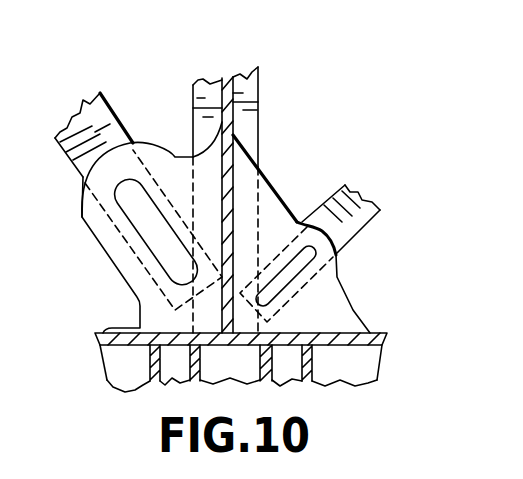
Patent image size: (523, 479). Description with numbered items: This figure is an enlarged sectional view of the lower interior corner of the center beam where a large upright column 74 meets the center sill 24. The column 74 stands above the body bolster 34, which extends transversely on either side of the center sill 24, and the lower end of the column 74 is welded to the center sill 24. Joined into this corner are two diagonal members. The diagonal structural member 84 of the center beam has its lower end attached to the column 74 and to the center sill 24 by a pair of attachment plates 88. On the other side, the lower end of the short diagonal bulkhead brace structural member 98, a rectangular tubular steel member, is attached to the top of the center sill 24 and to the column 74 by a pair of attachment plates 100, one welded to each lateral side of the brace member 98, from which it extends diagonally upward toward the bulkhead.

The center sill 24 is at (103, 330).
The body bolster 34 is at (312, 360).
The column 74 is at (247, 120).
The diagonal structural member 84 is at (138, 176).
The attachment plates 88 is at (168, 163).
The diagonal bulkhead brace structural member 98 is at (358, 224).
The attachment plates 100 is at (343, 315).